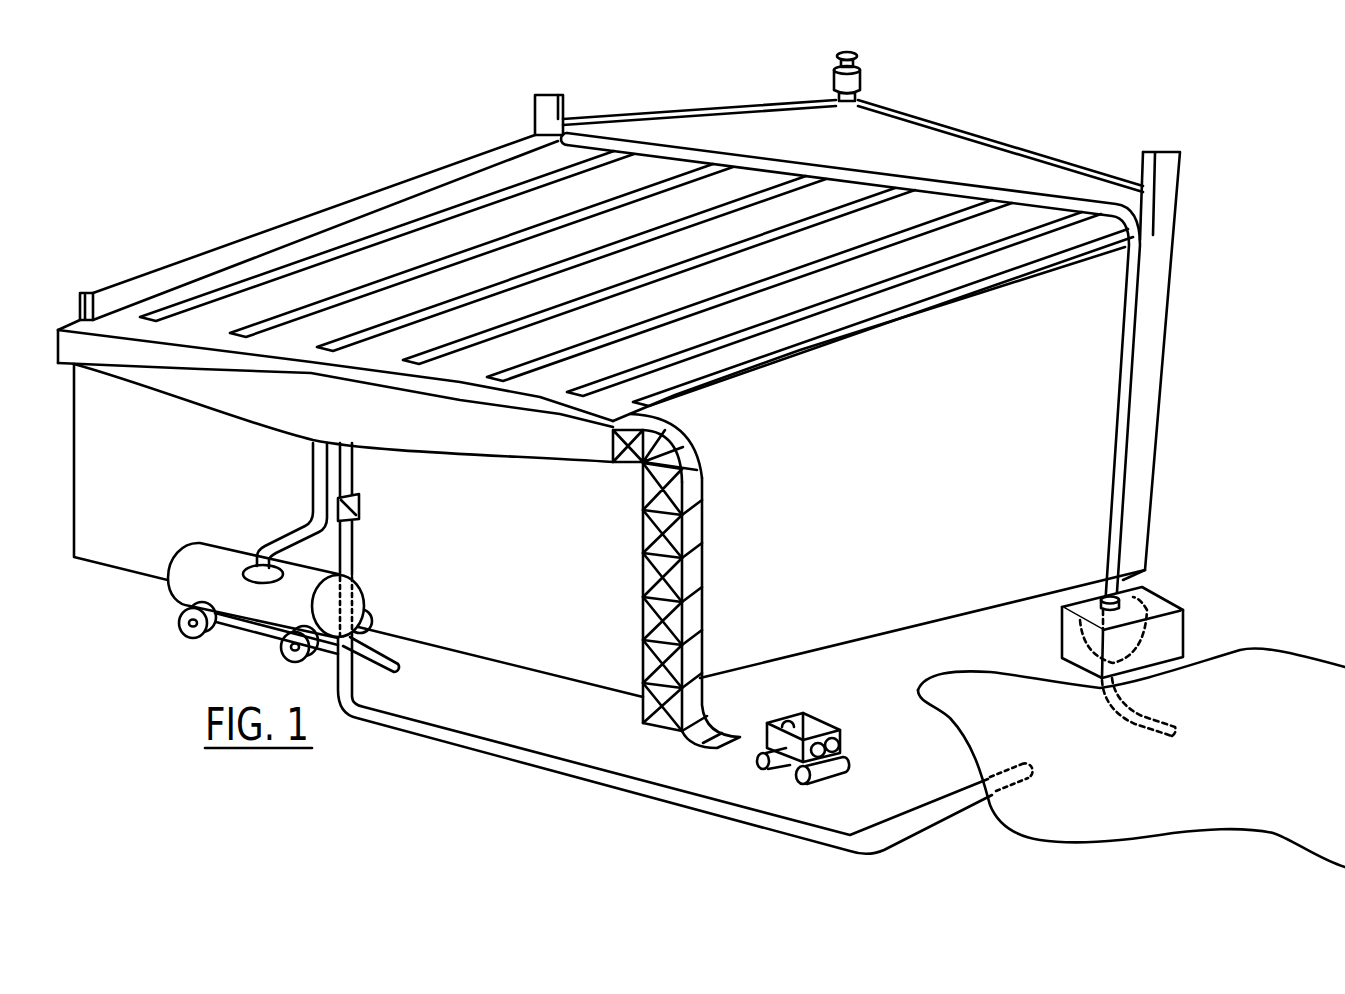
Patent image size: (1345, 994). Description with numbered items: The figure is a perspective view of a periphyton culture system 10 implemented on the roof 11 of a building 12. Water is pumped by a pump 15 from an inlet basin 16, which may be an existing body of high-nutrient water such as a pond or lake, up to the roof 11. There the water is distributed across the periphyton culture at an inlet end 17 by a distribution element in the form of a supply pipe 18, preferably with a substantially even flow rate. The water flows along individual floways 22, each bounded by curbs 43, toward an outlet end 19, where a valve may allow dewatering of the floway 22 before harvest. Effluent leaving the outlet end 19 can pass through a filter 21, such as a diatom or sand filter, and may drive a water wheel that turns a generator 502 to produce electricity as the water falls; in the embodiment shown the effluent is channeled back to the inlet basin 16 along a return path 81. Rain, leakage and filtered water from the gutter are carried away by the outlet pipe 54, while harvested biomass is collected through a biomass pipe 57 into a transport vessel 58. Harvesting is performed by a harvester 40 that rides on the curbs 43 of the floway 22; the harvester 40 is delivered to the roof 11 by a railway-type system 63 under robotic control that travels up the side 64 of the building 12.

The periphyton culture system 10 is at (325, 150).
The roof 11 is at (595, 271).
The building 12 is at (1105, 393).
The pump 15 is at (1137, 607).
The inlet basin 16 is at (1282, 760).
The inlet end 17 is at (993, 178).
The supply pipe 18 is at (1052, 203).
The outlet end 19 is at (135, 297).
The filter 21 is at (352, 473).
The floway 22 is at (788, 197).
The harvester 40 is at (837, 719).
The curbs 43 is at (722, 197).
The outlet pipe 54 is at (352, 540).
The biomass pipe 57 is at (318, 478).
The transport vessel 58 is at (368, 596).
The railway-type system 63 is at (693, 538).
The side of the building 64 is at (944, 493).
The return path 81 is at (490, 745).
The generator 502 is at (353, 512).